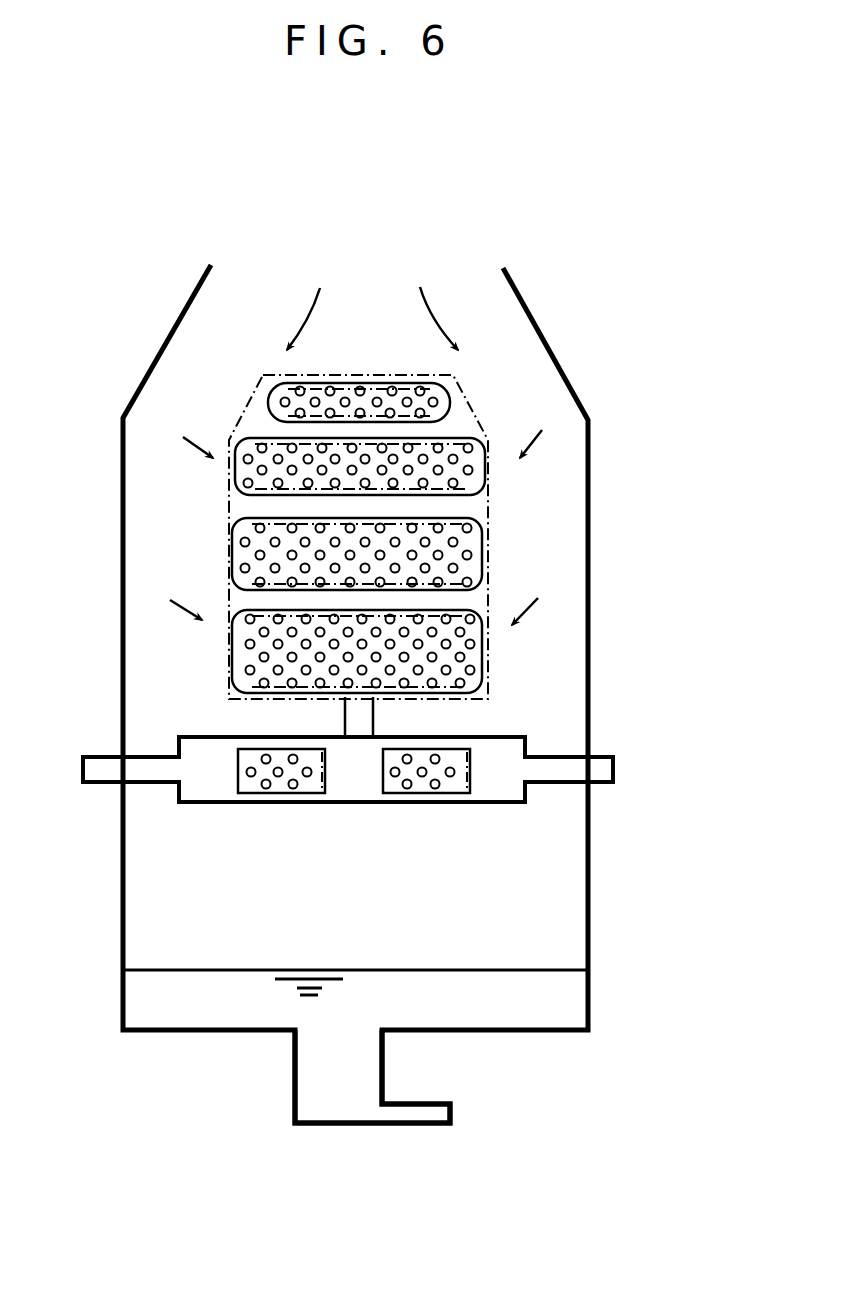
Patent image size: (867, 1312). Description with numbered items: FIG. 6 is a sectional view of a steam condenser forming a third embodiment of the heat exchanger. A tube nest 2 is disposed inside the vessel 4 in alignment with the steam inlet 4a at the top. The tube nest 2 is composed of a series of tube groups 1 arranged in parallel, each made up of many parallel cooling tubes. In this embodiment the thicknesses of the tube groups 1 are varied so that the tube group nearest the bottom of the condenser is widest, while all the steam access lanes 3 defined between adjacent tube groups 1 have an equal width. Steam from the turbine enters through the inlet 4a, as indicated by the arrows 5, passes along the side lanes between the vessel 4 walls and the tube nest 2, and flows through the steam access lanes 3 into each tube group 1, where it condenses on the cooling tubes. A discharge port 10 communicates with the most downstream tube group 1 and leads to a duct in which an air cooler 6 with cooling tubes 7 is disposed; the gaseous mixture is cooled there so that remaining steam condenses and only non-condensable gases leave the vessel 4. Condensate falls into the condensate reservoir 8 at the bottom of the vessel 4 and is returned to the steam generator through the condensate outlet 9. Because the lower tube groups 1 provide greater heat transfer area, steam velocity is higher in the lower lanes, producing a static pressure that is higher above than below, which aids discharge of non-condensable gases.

The tube group 1 is at (257, 368).
The tube nest 2 is at (228, 483).
The steam access lane 3 is at (443, 428).
The vessel 4 is at (123, 455).
The steam inlet 4a is at (357, 300).
The arrows 5 is at (318, 290).
The air cooler 6 is at (207, 803).
The cooling tubes 7 is at (281, 793).
The condensate reservoir 8 is at (160, 1017).
The condensate outlet 9 is at (412, 1125).
The discharge port 10 is at (355, 700).